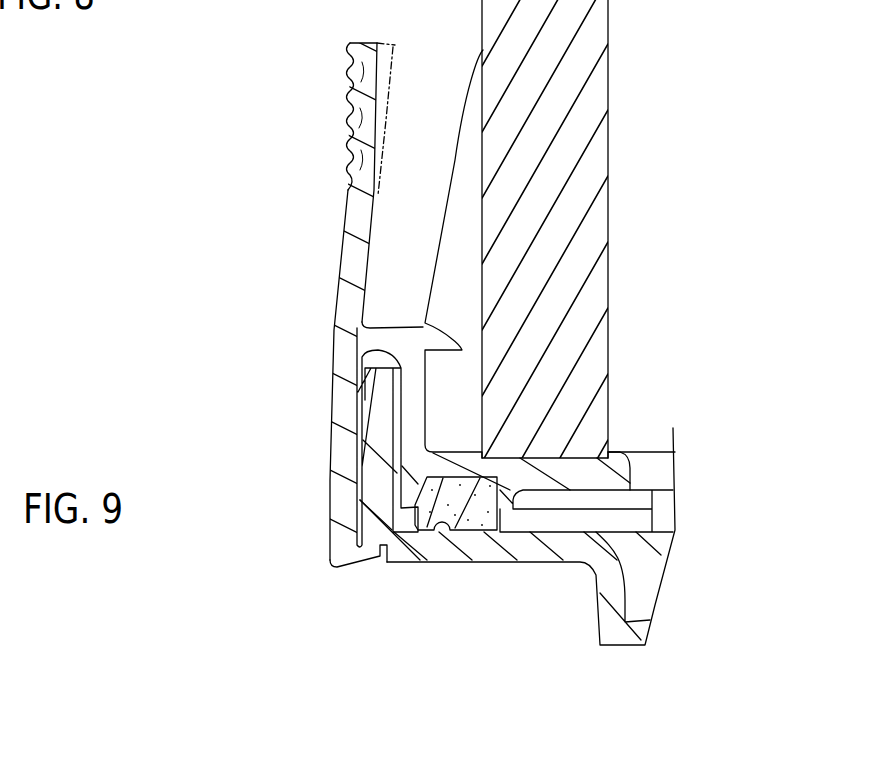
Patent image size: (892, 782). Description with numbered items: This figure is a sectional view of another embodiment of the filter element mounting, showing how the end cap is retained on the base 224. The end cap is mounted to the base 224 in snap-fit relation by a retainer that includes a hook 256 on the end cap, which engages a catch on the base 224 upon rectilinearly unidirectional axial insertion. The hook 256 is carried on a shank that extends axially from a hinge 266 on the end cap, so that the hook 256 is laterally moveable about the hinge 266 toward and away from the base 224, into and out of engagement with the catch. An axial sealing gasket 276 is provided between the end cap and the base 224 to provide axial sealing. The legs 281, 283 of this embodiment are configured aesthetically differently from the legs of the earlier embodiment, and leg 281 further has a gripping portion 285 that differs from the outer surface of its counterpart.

The base 224 is at (603, 627).
The hook 256 is at (342, 558).
The hinge 266 is at (377, 342).
The axial sealing gasket 276 is at (478, 520).
The leg 281 is at (363, 43).
The leg 283 is at (340, 455).
The gripping portion 285 is at (350, 96).